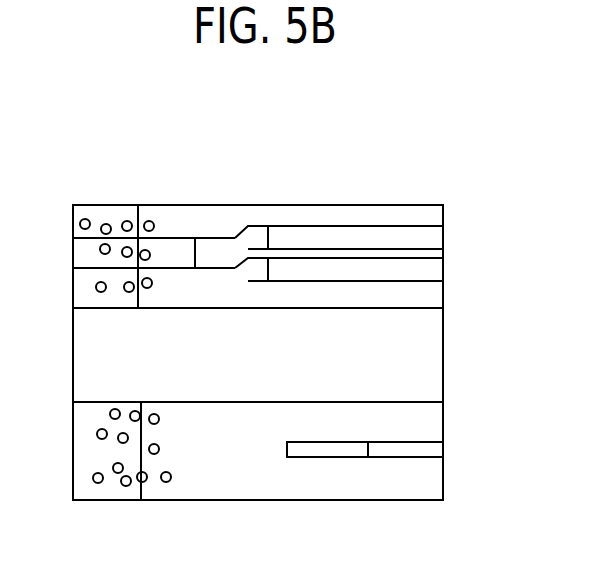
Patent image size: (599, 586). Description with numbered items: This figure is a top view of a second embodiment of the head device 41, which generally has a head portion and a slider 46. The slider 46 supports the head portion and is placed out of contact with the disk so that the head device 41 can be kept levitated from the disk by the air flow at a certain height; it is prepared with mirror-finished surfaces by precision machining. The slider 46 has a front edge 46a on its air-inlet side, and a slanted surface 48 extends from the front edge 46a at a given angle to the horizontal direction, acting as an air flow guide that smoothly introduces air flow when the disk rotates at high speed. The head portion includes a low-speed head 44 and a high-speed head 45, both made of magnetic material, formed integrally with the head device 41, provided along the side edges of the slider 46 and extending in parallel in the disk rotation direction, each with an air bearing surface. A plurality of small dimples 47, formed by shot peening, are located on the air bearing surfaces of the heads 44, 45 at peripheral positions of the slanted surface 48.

The head device 41 is at (294, 193).
The low-speed head 44 is at (437, 240).
The high-speed head 45 is at (430, 452).
The slider 46 is at (286, 480).
The front edge 46a is at (73, 500).
The dimples 47 is at (83, 219).
The slanted surface 48 is at (115, 490).